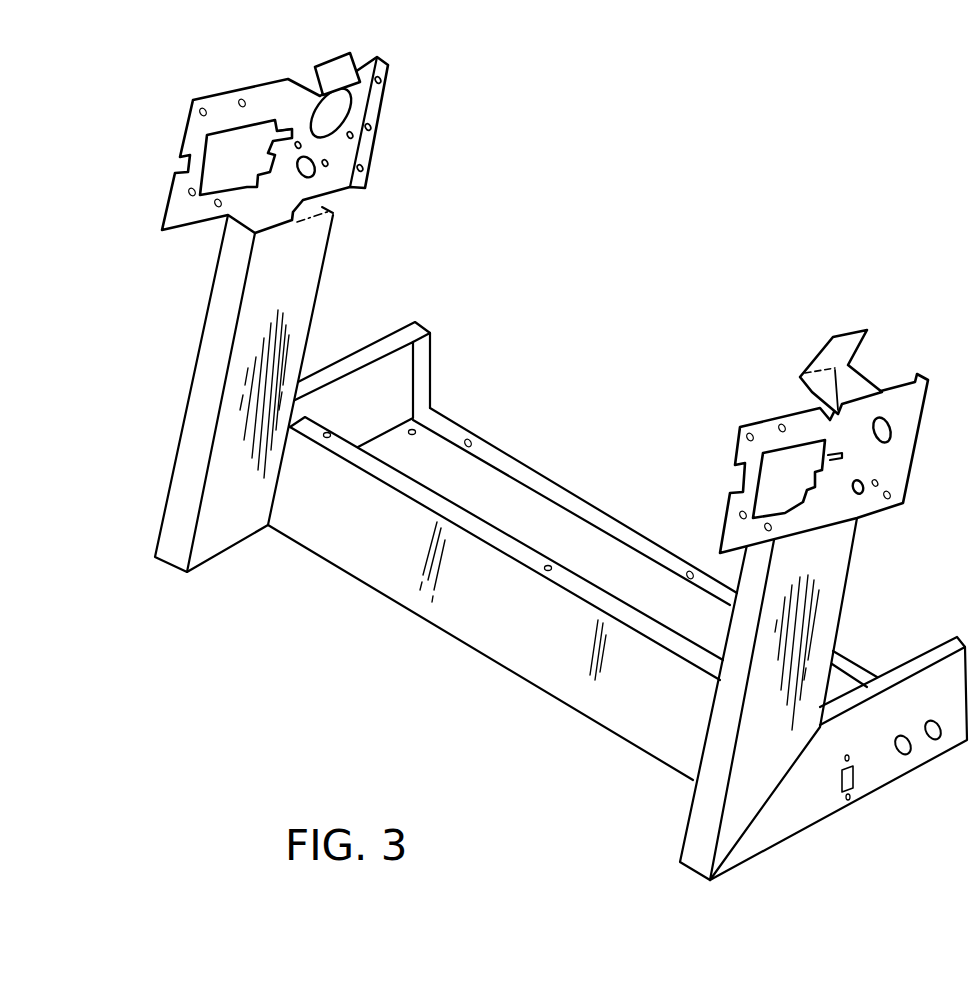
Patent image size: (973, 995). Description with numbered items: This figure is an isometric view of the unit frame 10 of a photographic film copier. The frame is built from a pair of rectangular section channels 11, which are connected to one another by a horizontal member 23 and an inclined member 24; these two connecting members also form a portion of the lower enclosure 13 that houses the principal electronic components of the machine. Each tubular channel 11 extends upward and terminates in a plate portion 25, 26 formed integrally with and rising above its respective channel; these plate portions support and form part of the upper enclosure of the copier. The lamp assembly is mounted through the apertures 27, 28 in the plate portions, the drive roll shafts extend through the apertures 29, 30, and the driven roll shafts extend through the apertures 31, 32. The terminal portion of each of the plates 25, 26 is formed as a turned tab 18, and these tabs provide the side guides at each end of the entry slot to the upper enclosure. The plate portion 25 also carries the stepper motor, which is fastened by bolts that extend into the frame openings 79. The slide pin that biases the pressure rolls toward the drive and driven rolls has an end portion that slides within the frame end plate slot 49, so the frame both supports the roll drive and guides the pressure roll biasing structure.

The unit frame 10 is at (612, 735).
The rectangular section channel 11 is at (212, 325).
The lower enclosure 13 is at (370, 344).
The turned tab 18 is at (345, 55).
The horizontal member 23 is at (616, 521).
The inclined member 24 is at (438, 592).
The plate portion 25 is at (228, 90).
The plate portion 26 is at (760, 420).
The aperture 27 is at (240, 130).
The aperture 28 is at (797, 453).
The aperture 29 is at (352, 108).
The aperture 30 is at (892, 432).
The aperture 31 is at (312, 176).
The aperture 32 is at (862, 495).
The frame end plate slot 49 is at (287, 130).
The frame opening 79 is at (380, 62).